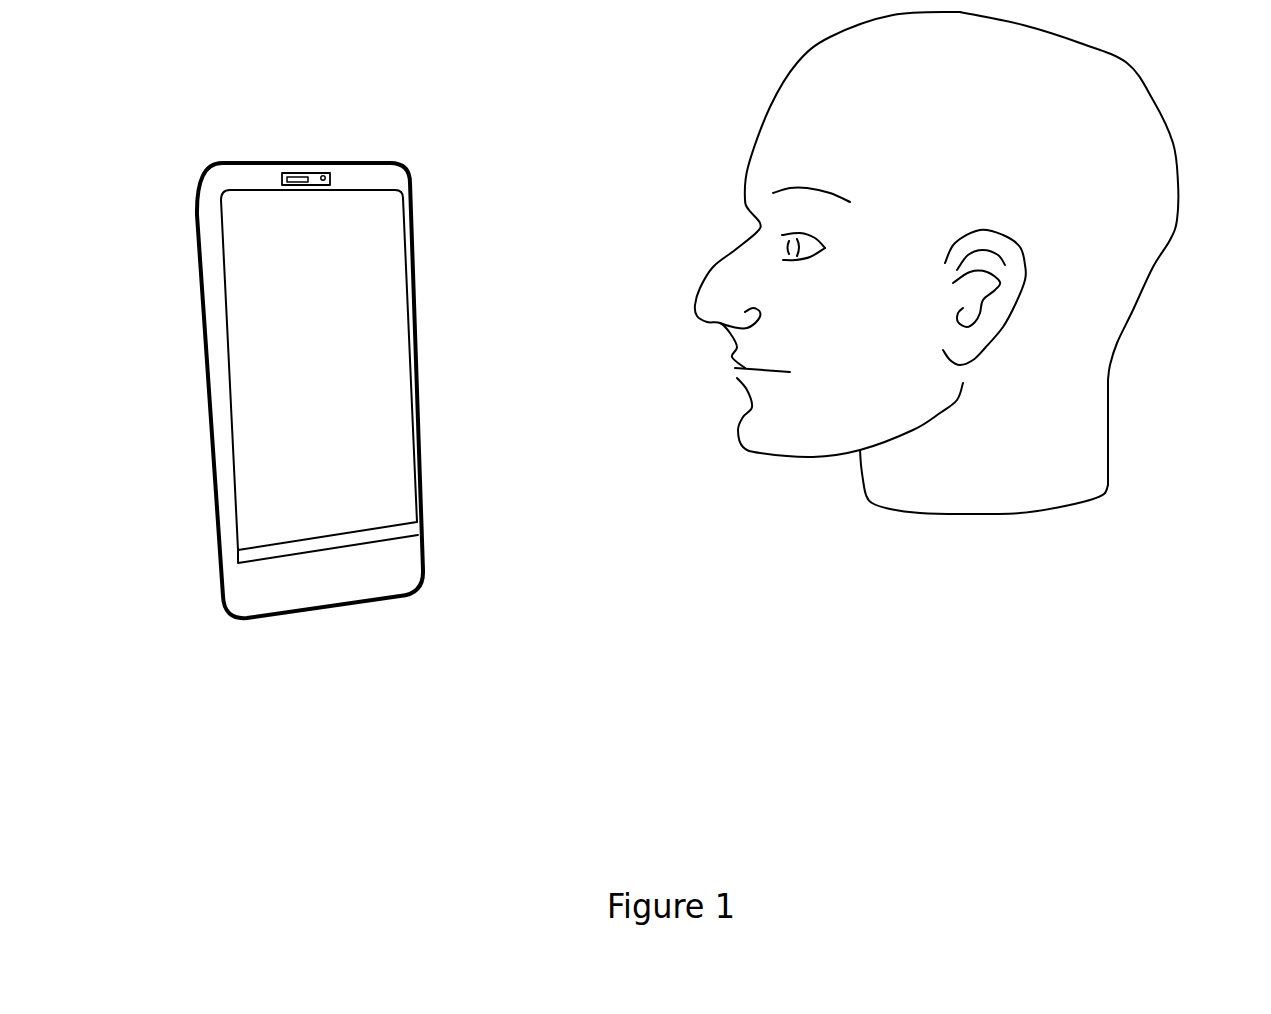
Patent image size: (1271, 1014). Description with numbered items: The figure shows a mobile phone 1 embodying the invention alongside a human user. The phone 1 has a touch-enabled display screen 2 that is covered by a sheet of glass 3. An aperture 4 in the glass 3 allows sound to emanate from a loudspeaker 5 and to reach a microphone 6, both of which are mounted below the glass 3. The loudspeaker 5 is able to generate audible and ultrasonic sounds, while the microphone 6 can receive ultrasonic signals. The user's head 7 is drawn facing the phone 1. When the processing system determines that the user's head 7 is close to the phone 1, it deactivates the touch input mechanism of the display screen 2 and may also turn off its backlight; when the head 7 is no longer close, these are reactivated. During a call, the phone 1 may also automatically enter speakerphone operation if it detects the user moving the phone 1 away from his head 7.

The mobile phone 1 is at (475, 422).
The touch-enabled display screen 2 is at (348, 293).
The sheet of glass 3 is at (373, 182).
The aperture 4 is at (295, 170).
The loudspeaker 5 is at (303, 175).
The microphone 6 is at (323, 177).
The user's head 7 is at (1048, 373).